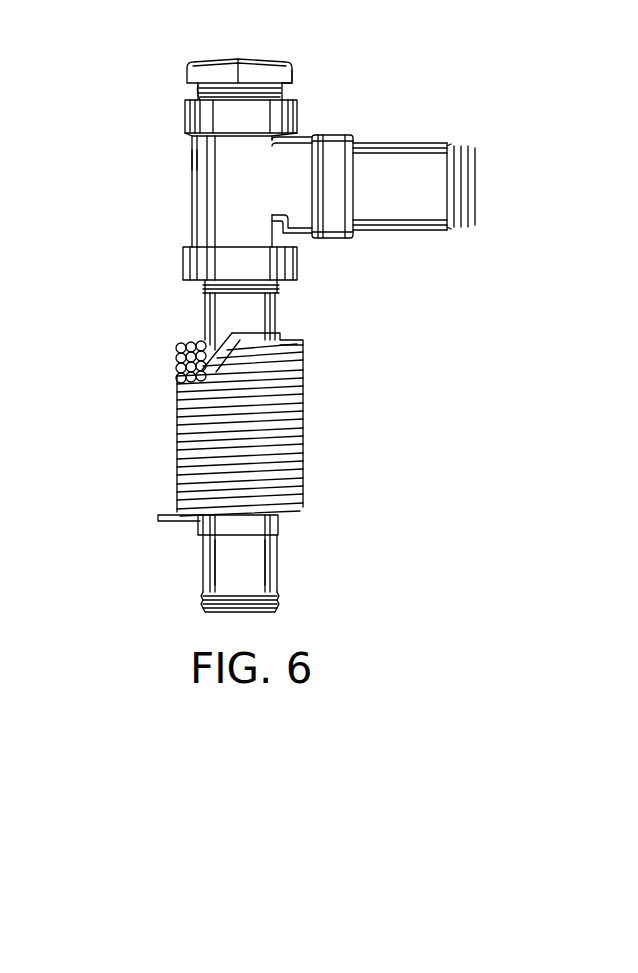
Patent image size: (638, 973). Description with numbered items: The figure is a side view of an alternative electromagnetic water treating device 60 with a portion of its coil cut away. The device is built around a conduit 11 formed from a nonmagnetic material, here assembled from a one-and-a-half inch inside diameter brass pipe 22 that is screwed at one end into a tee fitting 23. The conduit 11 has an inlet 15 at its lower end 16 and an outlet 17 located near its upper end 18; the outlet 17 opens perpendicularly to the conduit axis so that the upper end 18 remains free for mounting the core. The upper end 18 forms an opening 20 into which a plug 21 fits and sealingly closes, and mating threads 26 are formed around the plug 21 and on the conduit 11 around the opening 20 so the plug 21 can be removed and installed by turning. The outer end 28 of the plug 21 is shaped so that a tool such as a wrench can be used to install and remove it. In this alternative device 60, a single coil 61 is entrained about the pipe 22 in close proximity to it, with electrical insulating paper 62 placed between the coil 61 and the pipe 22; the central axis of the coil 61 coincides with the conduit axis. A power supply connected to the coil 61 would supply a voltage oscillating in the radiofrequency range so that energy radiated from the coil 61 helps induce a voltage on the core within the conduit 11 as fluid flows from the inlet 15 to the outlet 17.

The conduit 11 is at (191, 221).
The inlet 15 is at (260, 612).
The lower end 16 is at (203, 594).
The outlet 17 is at (352, 138).
The upper end 18 is at (189, 117).
The opening 20 is at (200, 98).
The plug 21 is at (296, 73).
The pipe 22 is at (203, 552).
The tee fitting 23 is at (192, 162).
The mating threads 26 is at (284, 98).
The outer end 28 is at (238, 61).
The electromagnetic water treating device 60 is at (190, 298).
The coil 61 is at (303, 411).
The electrical insulating paper 62 is at (203, 342).